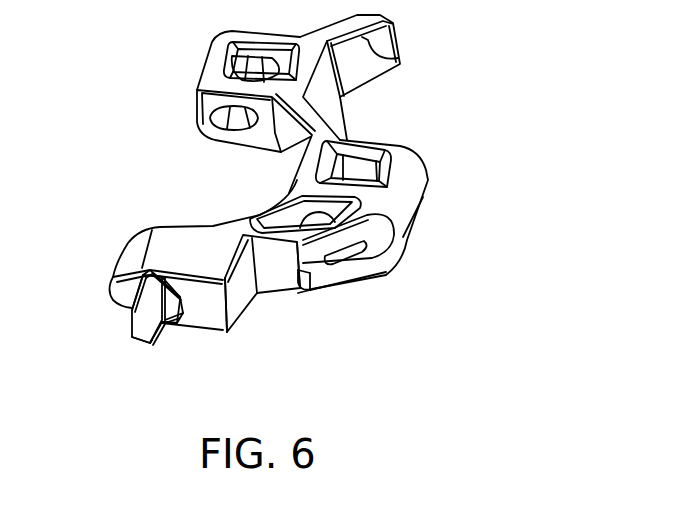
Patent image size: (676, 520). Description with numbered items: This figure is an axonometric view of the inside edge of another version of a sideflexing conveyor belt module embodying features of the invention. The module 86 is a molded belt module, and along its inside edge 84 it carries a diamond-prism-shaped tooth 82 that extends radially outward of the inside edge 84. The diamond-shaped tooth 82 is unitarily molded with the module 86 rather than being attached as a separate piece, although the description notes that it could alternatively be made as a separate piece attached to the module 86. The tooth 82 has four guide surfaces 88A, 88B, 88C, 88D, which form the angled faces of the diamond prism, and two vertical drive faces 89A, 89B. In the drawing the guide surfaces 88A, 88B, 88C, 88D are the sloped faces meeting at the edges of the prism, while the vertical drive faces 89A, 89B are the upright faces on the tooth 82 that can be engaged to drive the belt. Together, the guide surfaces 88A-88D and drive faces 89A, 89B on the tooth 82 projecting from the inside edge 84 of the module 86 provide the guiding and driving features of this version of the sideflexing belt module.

The module 86 is at (178, 127).
The inside edge 84 is at (228, 335).
The diamond-prism-shaped tooth 82 is at (150, 343).
The guide surface 88A is at (178, 318).
The guide surface 88B is at (113, 277).
The guide surface 88C is at (163, 353).
The guide surface 88D is at (140, 345).
The vertical drive face 89A is at (173, 327).
The vertical drive face 89B is at (134, 318).